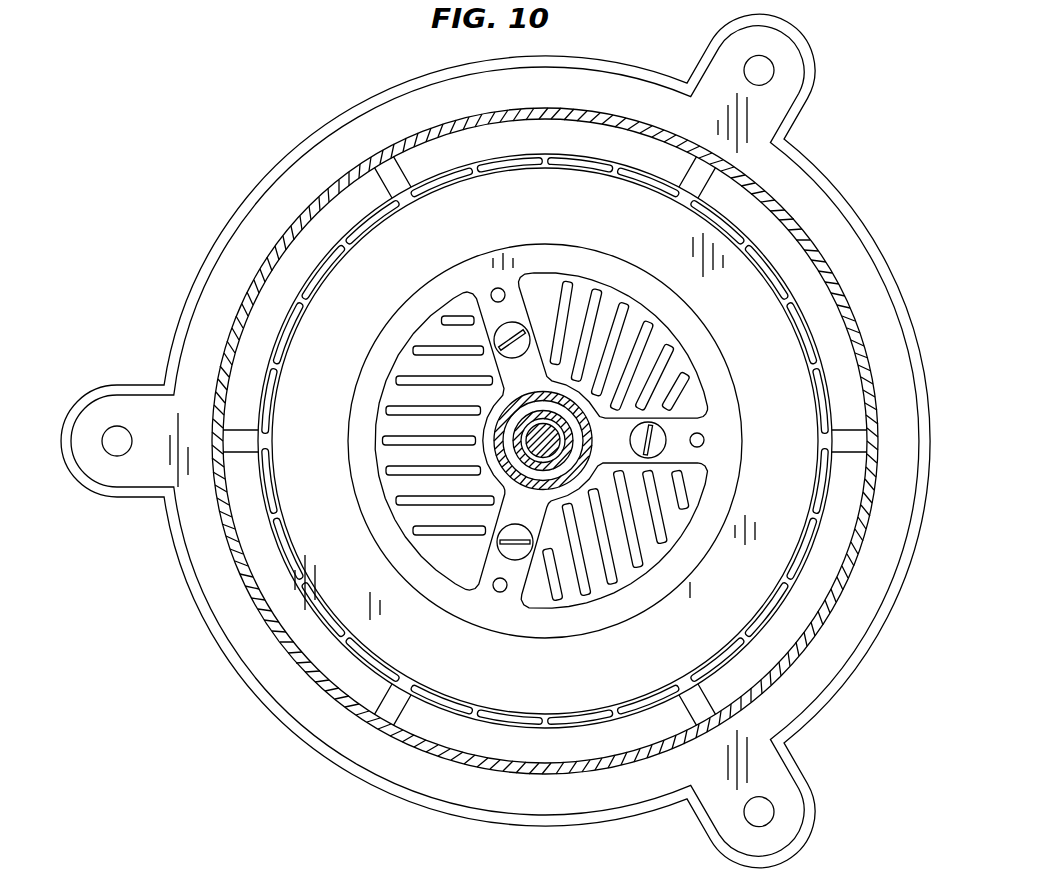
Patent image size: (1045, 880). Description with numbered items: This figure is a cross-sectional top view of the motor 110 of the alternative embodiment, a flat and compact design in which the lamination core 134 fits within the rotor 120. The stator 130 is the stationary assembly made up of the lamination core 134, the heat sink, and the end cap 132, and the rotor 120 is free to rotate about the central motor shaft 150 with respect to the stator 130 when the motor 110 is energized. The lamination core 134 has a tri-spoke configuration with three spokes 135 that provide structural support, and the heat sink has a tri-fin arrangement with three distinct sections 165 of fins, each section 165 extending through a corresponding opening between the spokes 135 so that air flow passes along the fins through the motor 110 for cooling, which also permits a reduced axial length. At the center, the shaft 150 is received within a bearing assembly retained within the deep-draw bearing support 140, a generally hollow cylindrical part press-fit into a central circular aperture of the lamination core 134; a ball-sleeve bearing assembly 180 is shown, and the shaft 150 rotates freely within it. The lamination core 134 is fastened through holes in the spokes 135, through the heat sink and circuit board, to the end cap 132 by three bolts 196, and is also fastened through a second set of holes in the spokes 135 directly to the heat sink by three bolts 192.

The motor 110 is at (200, 166).
The rotor 120 is at (405, 135).
The stator 130 is at (375, 213).
The end cap 132 is at (246, 688).
The lamination core 134 is at (395, 325).
The spokes 135 is at (525, 282).
The bearing support 140 is at (523, 496).
The central motor shaft 150 is at (524, 390).
The sections of fins 165 is at (368, 388).
The ball-sleeve bearing assembly 180 is at (570, 414).
The bolts 192 is at (478, 292).
The bolts 196 is at (704, 436).